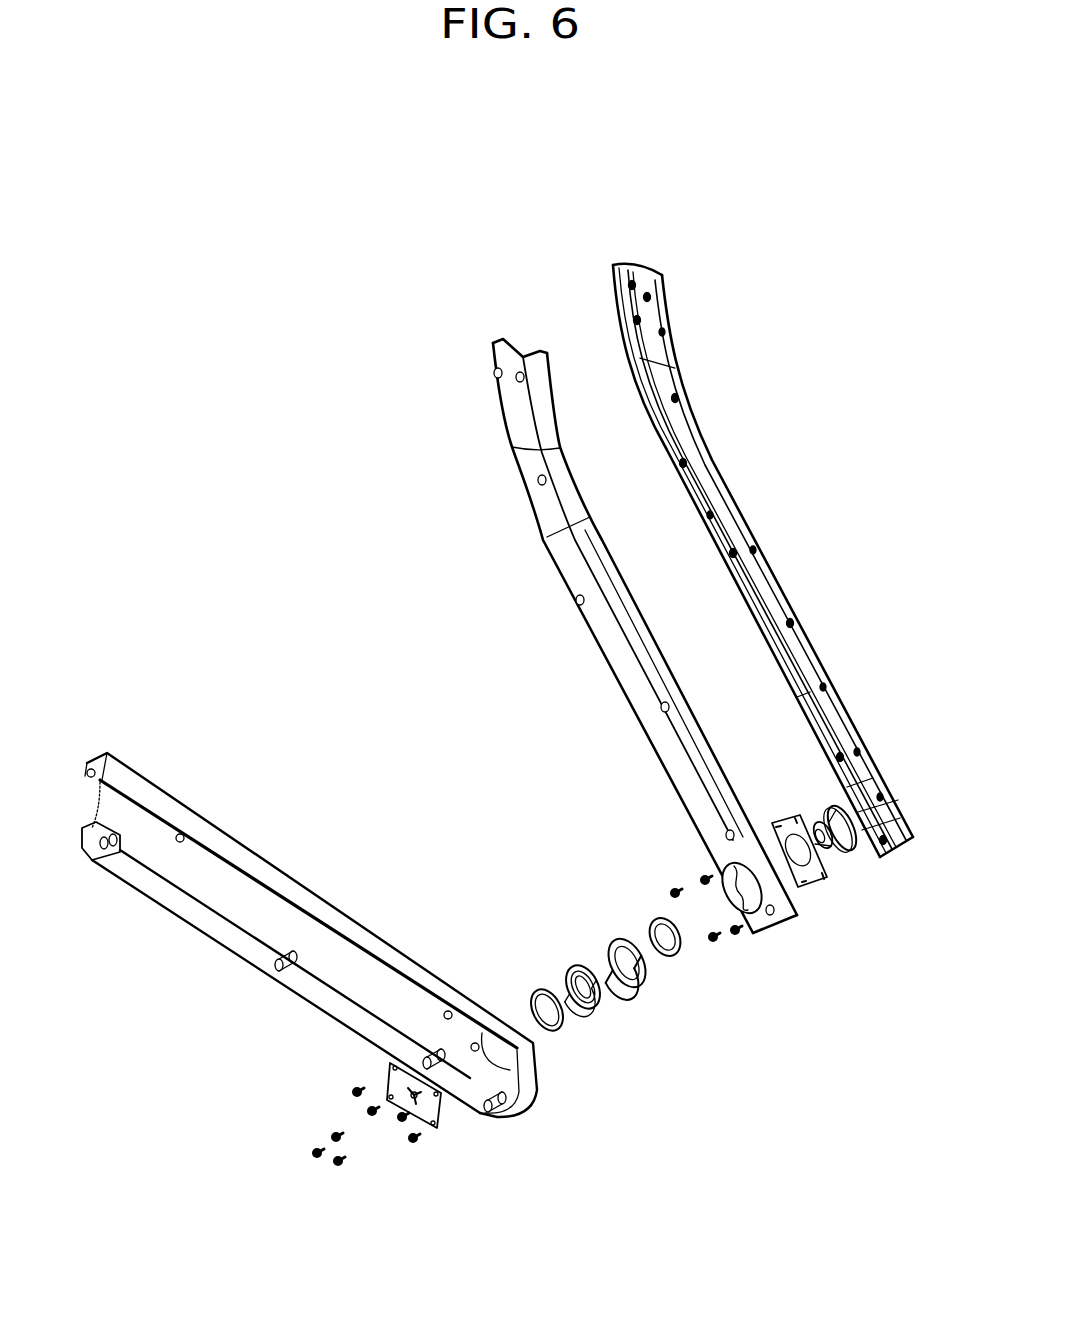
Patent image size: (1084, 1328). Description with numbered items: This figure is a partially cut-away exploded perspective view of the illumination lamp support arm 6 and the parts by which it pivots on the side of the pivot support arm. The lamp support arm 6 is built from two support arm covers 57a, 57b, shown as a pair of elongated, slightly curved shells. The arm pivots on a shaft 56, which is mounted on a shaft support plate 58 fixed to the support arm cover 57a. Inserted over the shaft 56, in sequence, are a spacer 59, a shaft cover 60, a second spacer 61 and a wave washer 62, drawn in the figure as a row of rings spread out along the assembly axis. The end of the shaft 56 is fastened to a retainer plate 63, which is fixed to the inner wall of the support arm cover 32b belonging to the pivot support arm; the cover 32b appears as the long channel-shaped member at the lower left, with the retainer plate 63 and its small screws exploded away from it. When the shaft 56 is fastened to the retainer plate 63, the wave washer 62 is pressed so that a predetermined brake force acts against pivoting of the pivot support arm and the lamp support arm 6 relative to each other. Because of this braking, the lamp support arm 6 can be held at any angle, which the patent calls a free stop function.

The lamp support arm 6 is at (612, 568).
The support arm cover 57a is at (607, 623).
The support arm cover 57b is at (769, 590).
The support arm cover 32b is at (248, 853).
The retainer plate 63 is at (435, 1102).
The wave washer 62 is at (553, 1030).
The spacer 61 is at (602, 1000).
The shaft cover 60 is at (648, 977).
The spacer 59 is at (682, 953).
The shaft support plate 58 is at (808, 885).
The shaft 56 is at (840, 840).